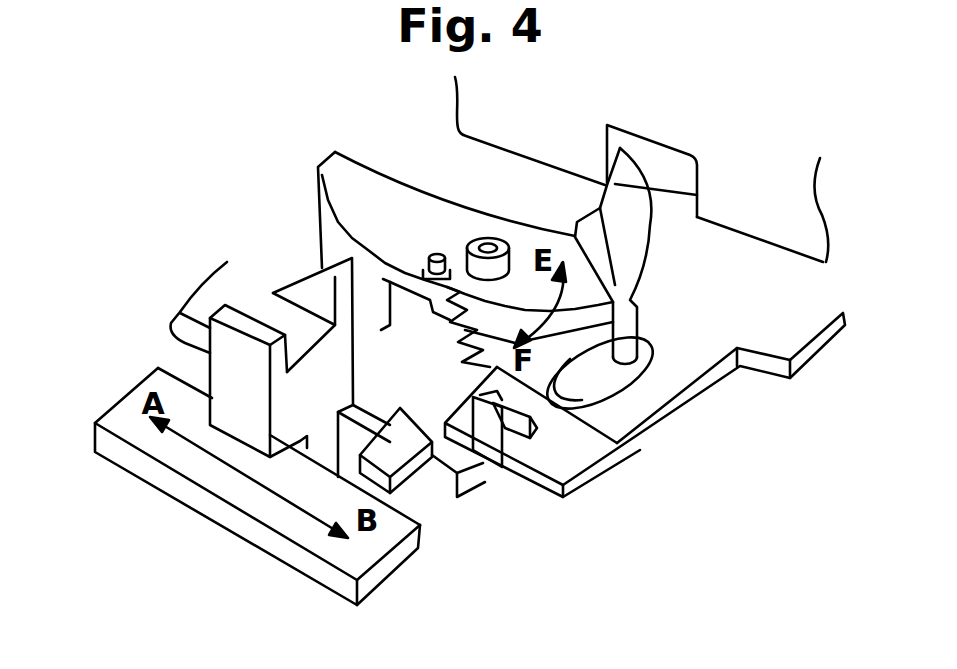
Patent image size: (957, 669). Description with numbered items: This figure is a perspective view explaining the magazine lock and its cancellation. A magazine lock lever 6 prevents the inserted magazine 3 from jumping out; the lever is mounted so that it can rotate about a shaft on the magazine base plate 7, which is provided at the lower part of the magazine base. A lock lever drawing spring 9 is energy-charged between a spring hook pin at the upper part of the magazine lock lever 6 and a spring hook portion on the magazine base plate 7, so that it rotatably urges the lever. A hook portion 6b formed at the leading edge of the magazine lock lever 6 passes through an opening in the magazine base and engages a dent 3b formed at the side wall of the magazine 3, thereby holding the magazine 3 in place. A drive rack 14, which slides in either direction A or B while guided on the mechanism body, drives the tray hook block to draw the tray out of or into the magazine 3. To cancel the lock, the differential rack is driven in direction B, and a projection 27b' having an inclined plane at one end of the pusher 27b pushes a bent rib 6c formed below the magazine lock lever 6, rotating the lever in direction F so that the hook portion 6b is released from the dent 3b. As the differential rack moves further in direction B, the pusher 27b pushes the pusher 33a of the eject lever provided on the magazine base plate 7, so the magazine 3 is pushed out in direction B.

The magazine 3 is at (798, 203).
The dent 3b is at (667, 163).
The magazine lock lever 6 is at (378, 197).
The hook portion 6b is at (628, 207).
The bent rib 6c is at (333, 228).
The magazine base plate 7 is at (682, 355).
The lock lever drawing spring 9 is at (603, 434).
The drive rack 14 is at (203, 483).
The pusher 27b is at (174, 359).
The projection 27b' is at (276, 323).
The pusher 33a is at (388, 460).